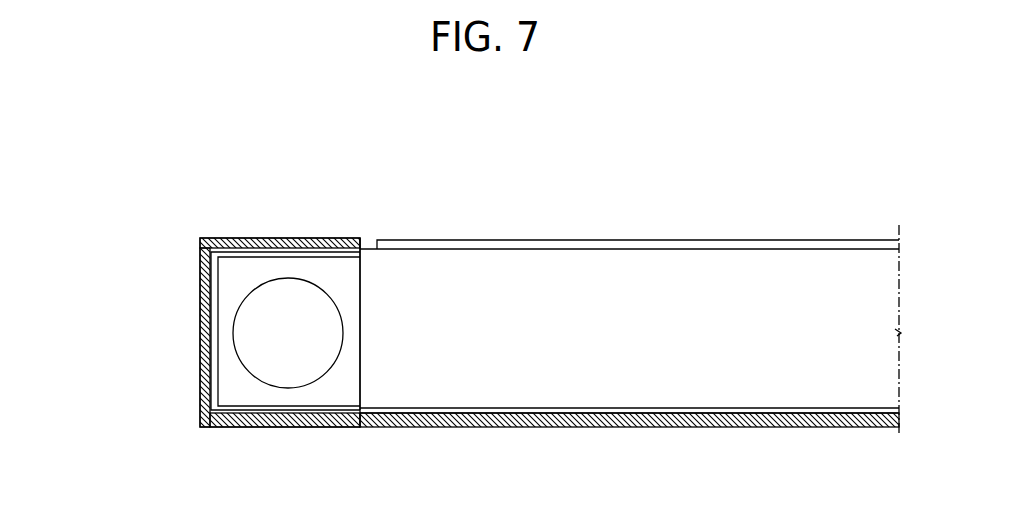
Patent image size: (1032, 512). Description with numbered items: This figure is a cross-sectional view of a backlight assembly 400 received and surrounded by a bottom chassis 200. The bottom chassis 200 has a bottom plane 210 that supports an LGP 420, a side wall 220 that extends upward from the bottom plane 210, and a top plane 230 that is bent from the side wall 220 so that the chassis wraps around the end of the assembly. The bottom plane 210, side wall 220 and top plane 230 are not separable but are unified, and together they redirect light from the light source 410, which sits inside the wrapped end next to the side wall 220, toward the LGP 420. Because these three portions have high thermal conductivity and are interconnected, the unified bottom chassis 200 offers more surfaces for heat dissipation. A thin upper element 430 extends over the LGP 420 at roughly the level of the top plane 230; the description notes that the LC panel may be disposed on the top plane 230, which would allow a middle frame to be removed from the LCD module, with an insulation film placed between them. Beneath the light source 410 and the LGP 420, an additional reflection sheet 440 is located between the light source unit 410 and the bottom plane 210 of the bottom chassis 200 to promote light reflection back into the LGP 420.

The bottom chassis 200 is at (90, 427).
The bottom plane 210 is at (240, 424).
The side wall 220 is at (200, 317).
The top plane 230 is at (270, 238).
The display device 400 is at (808, 165).
The light source 410 is at (290, 367).
The LGP 420 is at (705, 362).
The display panel 430 is at (642, 240).
The reflection sheet 440 is at (480, 407).